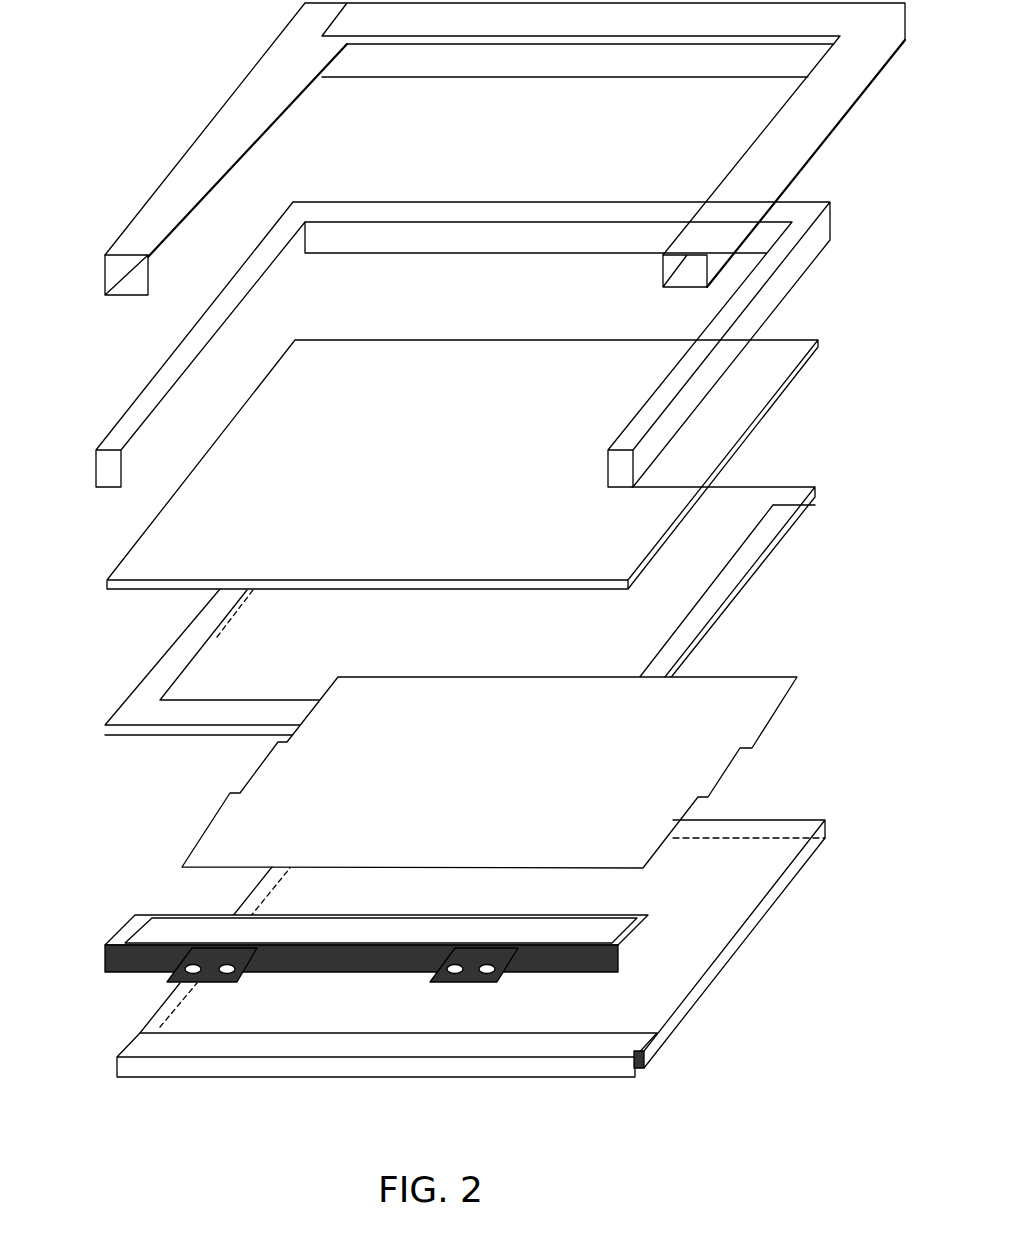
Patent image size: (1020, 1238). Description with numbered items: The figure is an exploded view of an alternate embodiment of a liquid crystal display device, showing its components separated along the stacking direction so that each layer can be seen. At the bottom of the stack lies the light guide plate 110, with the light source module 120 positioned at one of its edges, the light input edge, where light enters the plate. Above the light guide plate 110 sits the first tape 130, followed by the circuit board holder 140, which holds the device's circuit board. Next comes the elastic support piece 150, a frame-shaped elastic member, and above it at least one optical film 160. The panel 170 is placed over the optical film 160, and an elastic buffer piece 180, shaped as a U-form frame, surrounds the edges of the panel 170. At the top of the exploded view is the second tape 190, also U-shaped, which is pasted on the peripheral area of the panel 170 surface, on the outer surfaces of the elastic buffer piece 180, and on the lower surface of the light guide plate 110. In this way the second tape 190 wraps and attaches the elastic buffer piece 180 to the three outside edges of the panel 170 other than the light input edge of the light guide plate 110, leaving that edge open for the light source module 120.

The light guide plate 110 is at (690, 953).
The light source module 120 is at (643, 1065).
The first tape 130 is at (137, 1048).
The circuit board holder 140 is at (127, 927).
The elastic support piece 150 is at (158, 687).
The optical film 160 is at (223, 840).
The panel 170 is at (430, 490).
The elastic buffer piece 180 is at (130, 402).
The second tape 190 is at (153, 222).